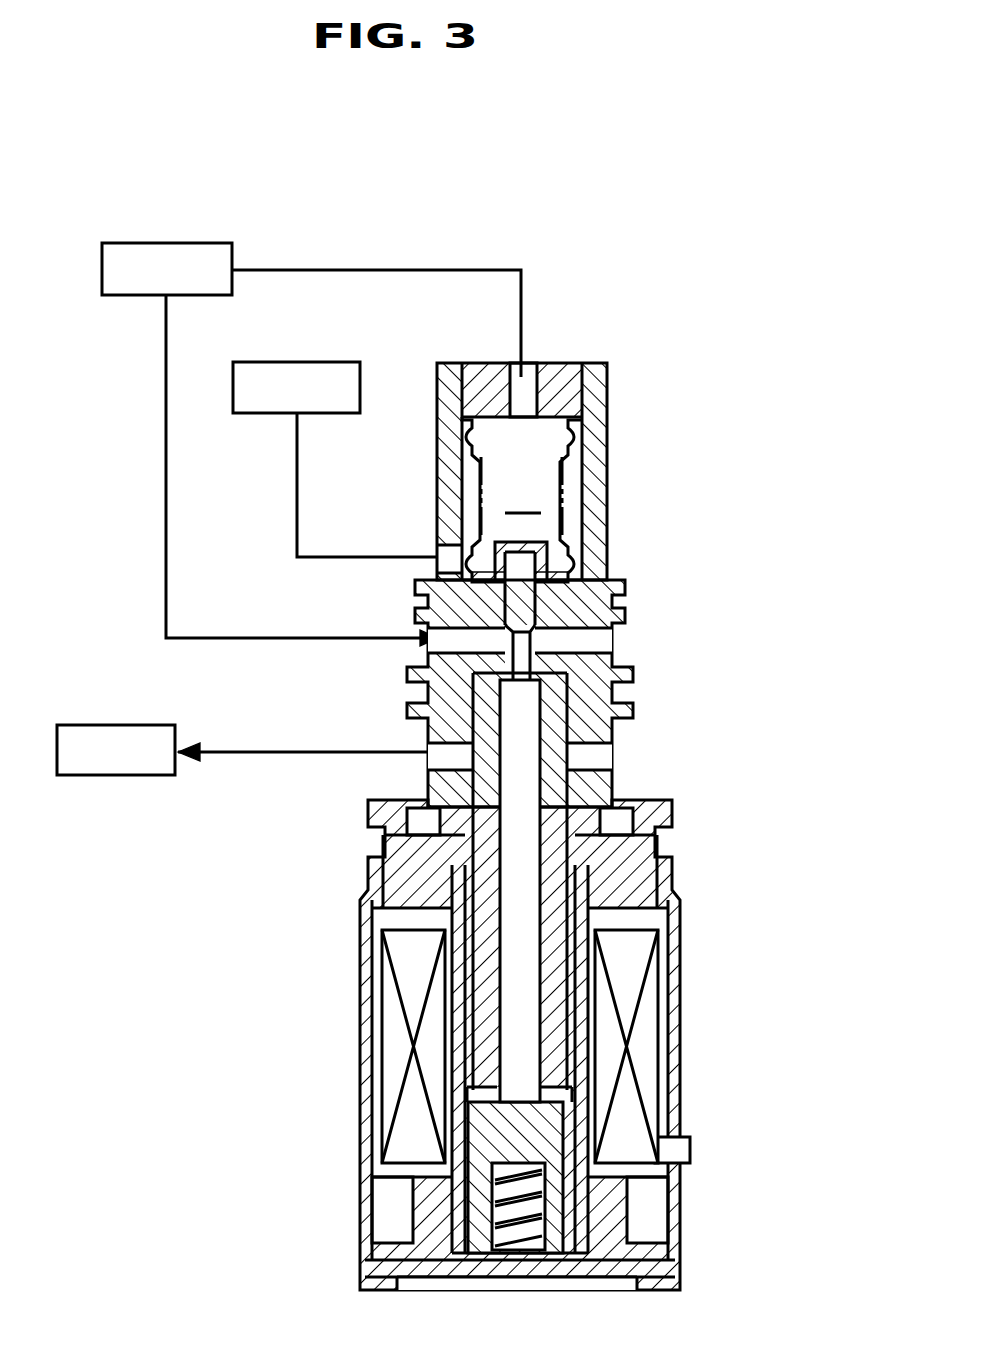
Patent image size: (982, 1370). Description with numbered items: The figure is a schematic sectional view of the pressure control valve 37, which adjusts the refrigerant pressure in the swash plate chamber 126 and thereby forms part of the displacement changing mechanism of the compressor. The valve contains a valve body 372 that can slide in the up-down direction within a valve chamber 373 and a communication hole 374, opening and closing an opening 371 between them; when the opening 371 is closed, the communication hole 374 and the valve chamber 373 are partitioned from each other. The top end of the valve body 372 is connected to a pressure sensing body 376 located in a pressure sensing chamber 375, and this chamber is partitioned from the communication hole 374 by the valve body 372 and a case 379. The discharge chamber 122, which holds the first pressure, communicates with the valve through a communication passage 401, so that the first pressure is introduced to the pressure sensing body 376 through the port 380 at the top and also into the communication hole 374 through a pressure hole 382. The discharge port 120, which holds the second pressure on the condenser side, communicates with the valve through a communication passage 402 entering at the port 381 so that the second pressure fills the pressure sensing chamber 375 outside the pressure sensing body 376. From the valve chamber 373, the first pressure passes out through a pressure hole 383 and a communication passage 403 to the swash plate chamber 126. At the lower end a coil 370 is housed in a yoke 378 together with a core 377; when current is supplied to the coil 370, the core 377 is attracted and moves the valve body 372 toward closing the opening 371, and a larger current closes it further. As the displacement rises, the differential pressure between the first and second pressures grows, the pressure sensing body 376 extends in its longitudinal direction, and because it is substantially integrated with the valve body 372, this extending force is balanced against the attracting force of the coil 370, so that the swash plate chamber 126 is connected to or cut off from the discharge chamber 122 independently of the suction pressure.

The pressure control valve 37 is at (684, 866).
The discharge port 120 is at (296, 387).
The discharge chamber 122 is at (167, 269).
The swash plate chamber 126 is at (116, 750).
The coil 370 is at (623, 988).
The opening 371 is at (560, 645).
The valve body 372 is at (535, 655).
The valve chamber 373 is at (523, 717).
The communication hole 374 is at (575, 622).
The pressure sensing chamber 375 is at (577, 442).
The pressure sensing body 376 is at (585, 423).
The core 377 is at (512, 1130).
The yoke 378 is at (678, 925).
The case 379 is at (590, 790).
The pressure introducing port 380 is at (528, 375).
The pressure port P2 381 is at (437, 548).
The pressure hole 382 is at (440, 648).
The pressure hole 383 is at (430, 757).
The communication passage 401 is at (166, 357).
The communication passage 402 is at (297, 522).
The communication passage 403 is at (278, 752).